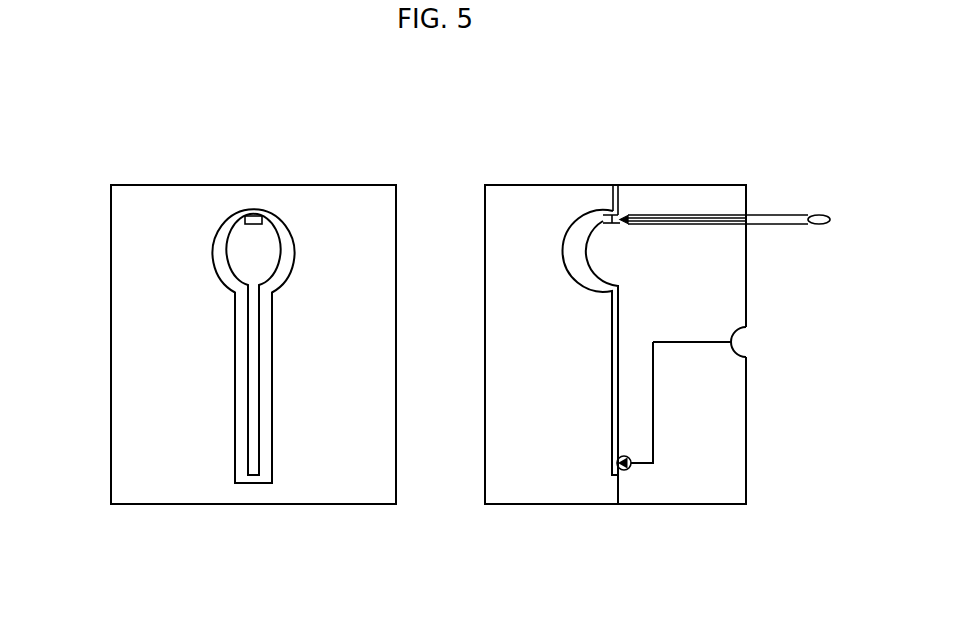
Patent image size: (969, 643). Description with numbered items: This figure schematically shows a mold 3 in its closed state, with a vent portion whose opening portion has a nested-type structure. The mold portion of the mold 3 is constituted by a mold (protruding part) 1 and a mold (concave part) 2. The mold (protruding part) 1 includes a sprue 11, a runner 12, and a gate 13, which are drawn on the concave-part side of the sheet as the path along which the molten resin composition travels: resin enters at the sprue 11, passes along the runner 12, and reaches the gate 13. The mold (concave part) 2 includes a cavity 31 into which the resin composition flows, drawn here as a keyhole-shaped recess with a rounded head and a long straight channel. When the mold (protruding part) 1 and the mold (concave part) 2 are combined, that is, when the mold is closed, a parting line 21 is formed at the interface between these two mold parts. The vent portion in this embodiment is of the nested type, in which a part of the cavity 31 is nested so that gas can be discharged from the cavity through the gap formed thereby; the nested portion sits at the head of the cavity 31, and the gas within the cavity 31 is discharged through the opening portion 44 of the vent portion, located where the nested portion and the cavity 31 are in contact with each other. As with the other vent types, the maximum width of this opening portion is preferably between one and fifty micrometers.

The mold (protruding part) 1 is at (746, 203).
The mold (concave part) 2 is at (485, 215).
The mold 3 is at (111, 226).
The sprue 11 is at (696, 342).
The runner 12 is at (653, 392).
The gate 13 is at (624, 470).
The parting line 21 is at (227, 268).
The cavity 31 is at (580, 250).
The opening portion (nested type) 44 is at (613, 208).